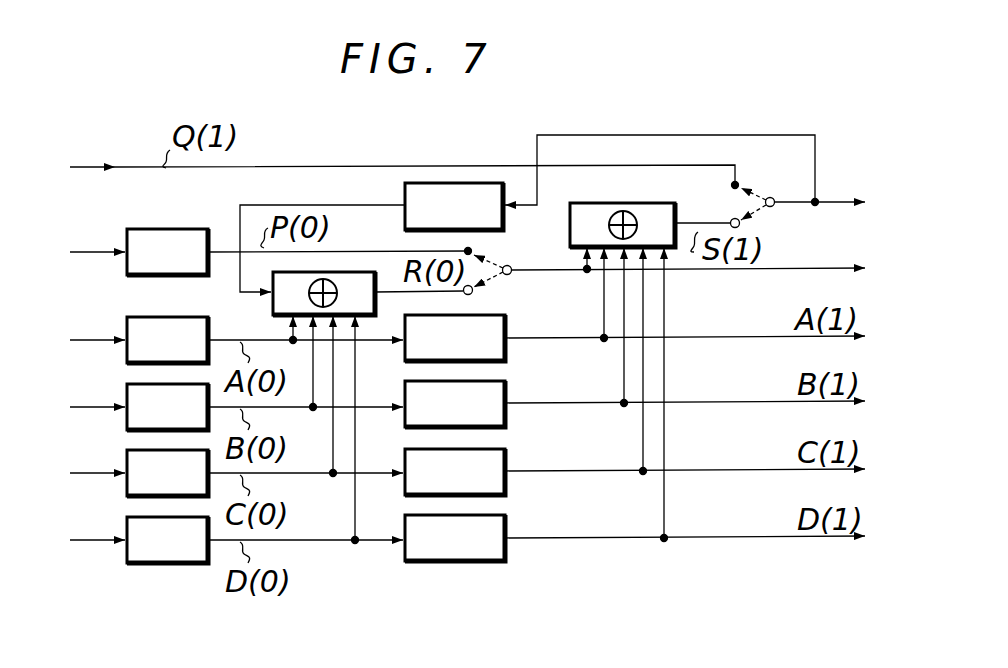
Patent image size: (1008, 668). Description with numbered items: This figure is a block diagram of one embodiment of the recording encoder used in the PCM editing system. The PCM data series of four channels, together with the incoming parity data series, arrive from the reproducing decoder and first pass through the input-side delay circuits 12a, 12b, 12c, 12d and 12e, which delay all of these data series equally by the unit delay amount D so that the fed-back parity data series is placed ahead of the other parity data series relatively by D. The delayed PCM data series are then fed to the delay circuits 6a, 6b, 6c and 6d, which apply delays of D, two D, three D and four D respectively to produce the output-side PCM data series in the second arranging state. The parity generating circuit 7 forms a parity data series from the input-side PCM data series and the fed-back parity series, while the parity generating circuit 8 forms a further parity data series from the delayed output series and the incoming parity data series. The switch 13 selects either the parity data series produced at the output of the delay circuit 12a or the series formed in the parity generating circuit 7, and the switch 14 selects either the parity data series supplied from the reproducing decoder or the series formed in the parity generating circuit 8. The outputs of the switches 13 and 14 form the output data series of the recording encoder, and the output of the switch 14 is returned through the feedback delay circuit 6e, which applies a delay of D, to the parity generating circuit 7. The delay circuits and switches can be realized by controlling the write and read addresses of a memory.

The delay circuit 12a is at (127, 272).
The delay circuit 12b is at (127, 360).
The delay circuit 12c is at (127, 427).
The delay circuit 12d is at (127, 493).
The delay circuit 12e is at (127, 560).
The delay circuit 6a is at (505, 320).
The delay circuit 6b is at (519, 374).
The delay circuit 6c is at (519, 442).
The delay circuit 6d is at (505, 520).
The feedback delay circuit 6e is at (405, 192).
The parity generating circuit 7 is at (272, 310).
The parity generating circuit 8 is at (655, 196).
The switch 13 is at (510, 269).
The switch 14 is at (766, 198).